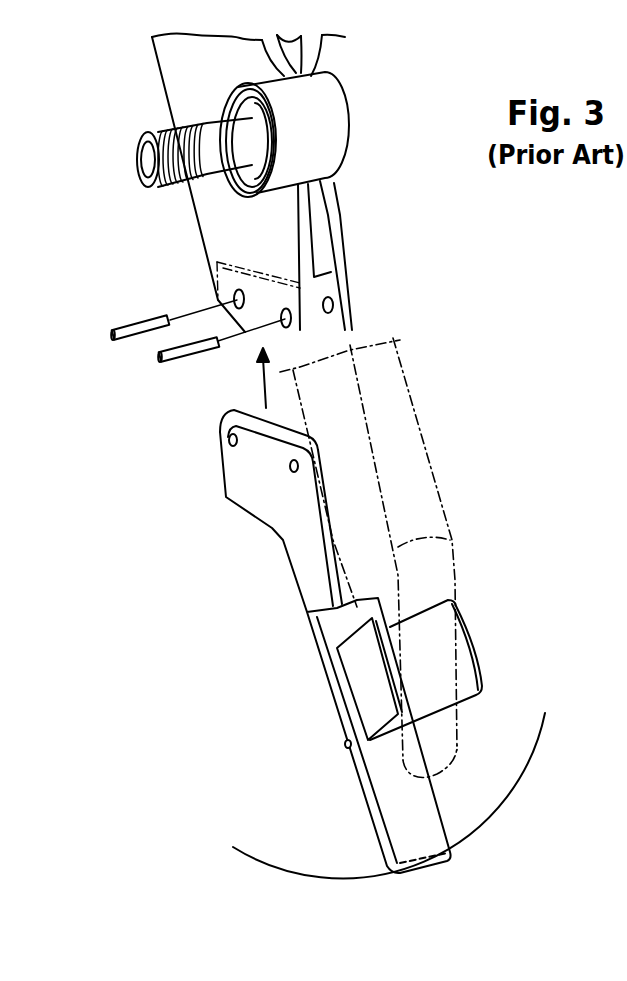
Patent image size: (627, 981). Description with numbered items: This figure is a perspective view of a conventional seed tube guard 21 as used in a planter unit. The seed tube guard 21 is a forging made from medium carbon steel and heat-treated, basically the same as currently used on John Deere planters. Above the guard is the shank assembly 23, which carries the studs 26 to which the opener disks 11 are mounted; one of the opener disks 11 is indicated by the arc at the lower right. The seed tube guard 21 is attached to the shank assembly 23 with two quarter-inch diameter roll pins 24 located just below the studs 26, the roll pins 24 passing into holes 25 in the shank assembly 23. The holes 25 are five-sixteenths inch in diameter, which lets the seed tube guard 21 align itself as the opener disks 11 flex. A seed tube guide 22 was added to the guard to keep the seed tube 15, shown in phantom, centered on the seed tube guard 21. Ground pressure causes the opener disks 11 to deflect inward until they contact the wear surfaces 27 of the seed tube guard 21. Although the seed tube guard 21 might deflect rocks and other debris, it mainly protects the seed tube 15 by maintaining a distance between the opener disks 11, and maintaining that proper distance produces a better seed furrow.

The opener disks 11 is at (530, 760).
The seed tube 15 is at (423, 455).
The seed tube guard 21 is at (292, 550).
The seed tube guide 22 is at (470, 637).
The shank assembly 23 is at (197, 213).
The roll pins 24 is at (113, 337).
The holes 25 is at (283, 319).
The studs 26 is at (140, 137).
The wear surfaces 27 is at (345, 747).